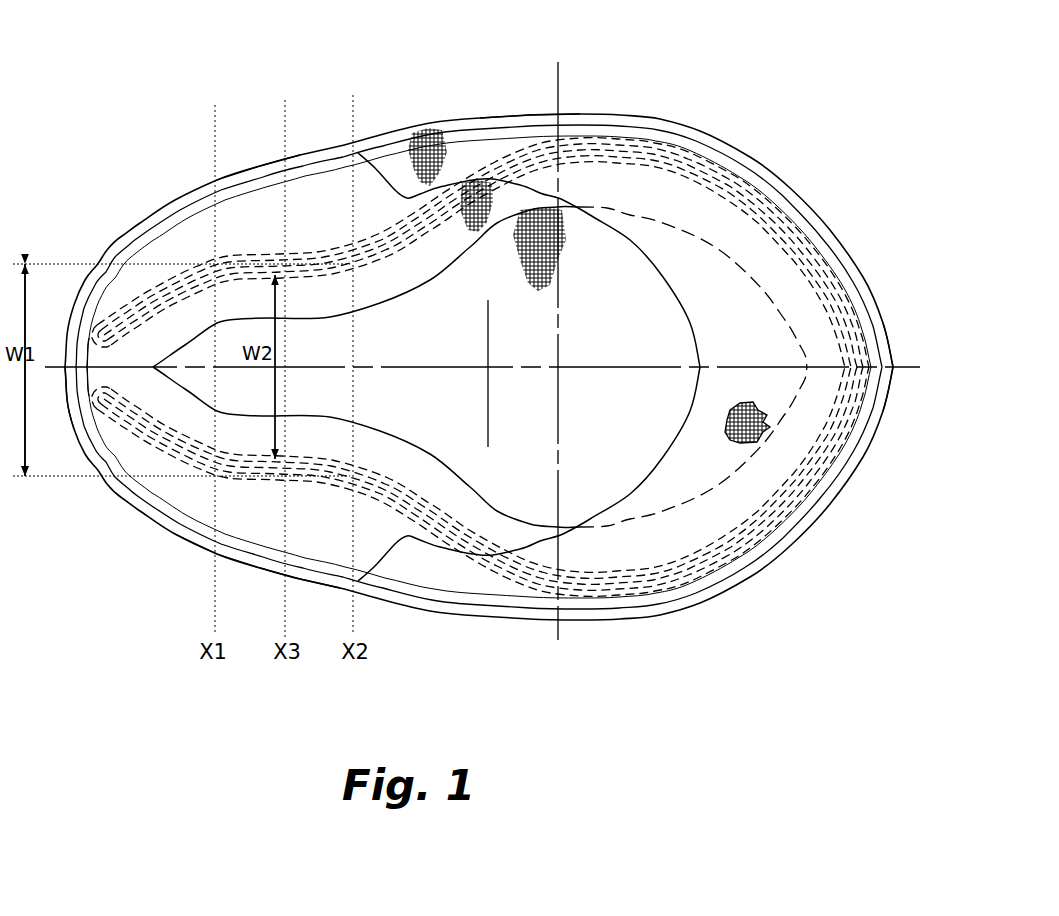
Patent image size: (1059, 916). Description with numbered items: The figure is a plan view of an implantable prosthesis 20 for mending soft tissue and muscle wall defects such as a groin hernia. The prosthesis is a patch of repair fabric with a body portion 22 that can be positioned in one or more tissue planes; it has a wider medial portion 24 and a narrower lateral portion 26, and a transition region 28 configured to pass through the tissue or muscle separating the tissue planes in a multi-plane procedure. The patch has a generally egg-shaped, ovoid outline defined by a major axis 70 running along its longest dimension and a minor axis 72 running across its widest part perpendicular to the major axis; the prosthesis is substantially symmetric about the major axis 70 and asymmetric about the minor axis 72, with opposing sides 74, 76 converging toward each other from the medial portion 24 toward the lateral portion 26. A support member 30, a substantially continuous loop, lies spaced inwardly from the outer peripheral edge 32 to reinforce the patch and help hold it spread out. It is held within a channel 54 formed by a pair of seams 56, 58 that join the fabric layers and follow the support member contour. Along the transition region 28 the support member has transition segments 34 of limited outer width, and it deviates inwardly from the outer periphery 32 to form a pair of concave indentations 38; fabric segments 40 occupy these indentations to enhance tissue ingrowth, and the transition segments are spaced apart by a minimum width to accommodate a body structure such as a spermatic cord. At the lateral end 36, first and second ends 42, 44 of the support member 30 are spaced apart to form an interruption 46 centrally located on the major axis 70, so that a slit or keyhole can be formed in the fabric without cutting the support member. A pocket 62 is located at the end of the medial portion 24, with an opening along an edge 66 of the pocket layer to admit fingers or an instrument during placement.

The prosthesis 20 is at (712, 102).
The body portion 22 is at (592, 567).
The medial portion 24 is at (755, 151).
The lateral portion 26 is at (155, 203).
The transition region 28 is at (275, 575).
The support member 30 is at (606, 130).
The outer peripheral edge 32 is at (527, 116).
The transition segment 34 is at (340, 252).
The lateral end 36 is at (66, 382).
The indentations 38 is at (382, 230).
The fabric segments 40 is at (278, 236).
The first end 42 is at (112, 323).
The second end 44 is at (86, 441).
The interruption 46 is at (86, 365).
The channel 54 is at (737, 553).
The seam 56 is at (779, 205).
The seam 58 is at (762, 222).
The pocket 62 is at (762, 430).
The edge 66 is at (680, 432).
The major axis 70 is at (907, 365).
The minor axis 72 is at (557, 81).
The side 74 is at (247, 172).
The side 76 is at (192, 542).